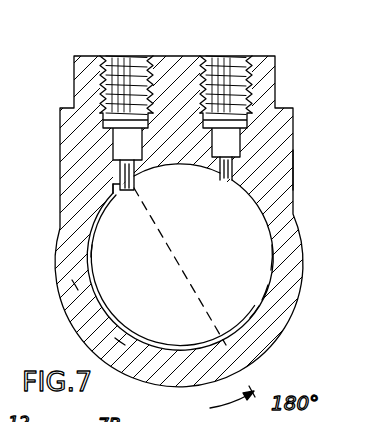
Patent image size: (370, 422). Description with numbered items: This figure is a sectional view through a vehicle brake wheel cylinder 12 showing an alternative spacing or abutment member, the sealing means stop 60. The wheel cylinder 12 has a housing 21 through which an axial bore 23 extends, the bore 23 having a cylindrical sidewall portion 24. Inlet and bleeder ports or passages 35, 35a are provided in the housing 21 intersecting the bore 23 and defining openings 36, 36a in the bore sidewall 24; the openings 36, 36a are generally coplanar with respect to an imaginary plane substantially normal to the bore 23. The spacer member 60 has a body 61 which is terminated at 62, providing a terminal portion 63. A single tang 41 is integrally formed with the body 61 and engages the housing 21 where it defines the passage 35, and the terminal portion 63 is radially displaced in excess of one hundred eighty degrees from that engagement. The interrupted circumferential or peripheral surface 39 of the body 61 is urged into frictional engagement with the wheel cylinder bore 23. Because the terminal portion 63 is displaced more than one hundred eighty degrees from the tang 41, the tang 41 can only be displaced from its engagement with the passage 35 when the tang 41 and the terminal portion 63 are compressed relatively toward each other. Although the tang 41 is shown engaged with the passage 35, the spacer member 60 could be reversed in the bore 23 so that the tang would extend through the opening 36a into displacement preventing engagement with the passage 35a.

The wheel cylinder 12 is at (285, 88).
The housing 21 is at (295, 170).
The axial bore 23 is at (120, 333).
The cylindrical sidewall portion 24 is at (269, 236).
The inlet port 35 is at (115, 62).
The bleeder port 35a is at (248, 64).
The opening 36 is at (146, 160).
The opening 36a is at (206, 175).
The interrupted peripheral surface 39 is at (78, 290).
The single tang 41 is at (112, 172).
The sealing means stop 60 is at (84, 235).
The body 61 is at (86, 268).
The termination 62 is at (262, 298).
The terminal portion 63 is at (262, 317).